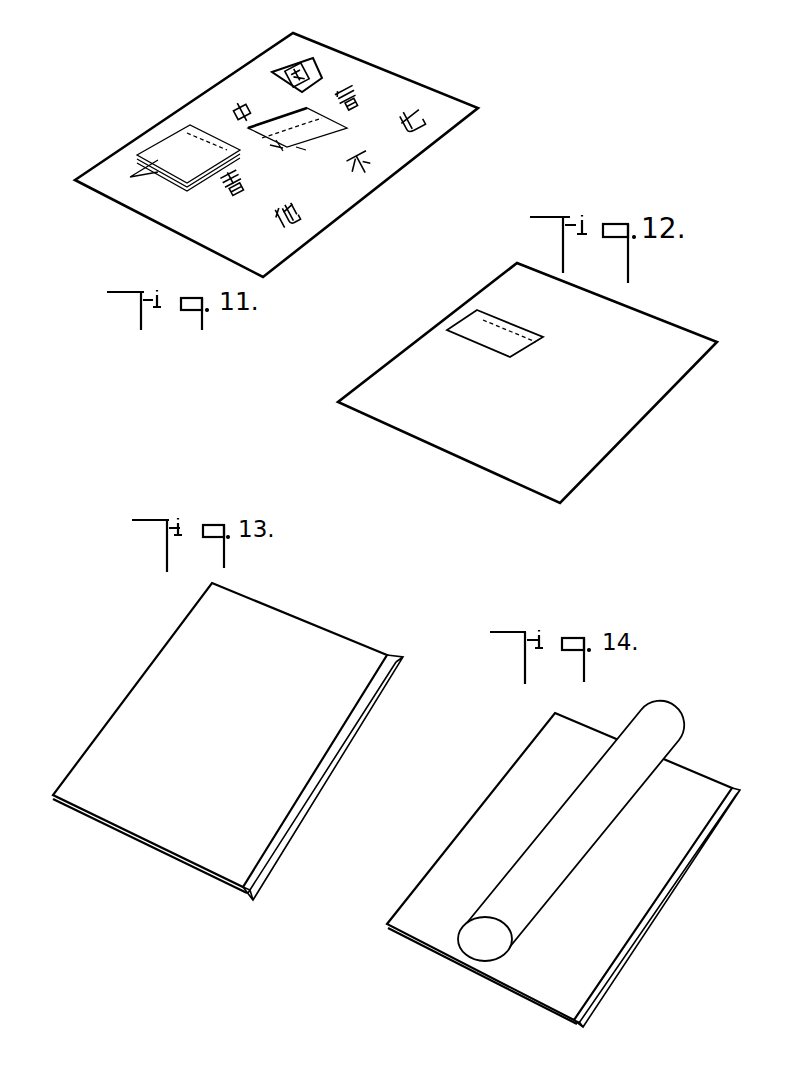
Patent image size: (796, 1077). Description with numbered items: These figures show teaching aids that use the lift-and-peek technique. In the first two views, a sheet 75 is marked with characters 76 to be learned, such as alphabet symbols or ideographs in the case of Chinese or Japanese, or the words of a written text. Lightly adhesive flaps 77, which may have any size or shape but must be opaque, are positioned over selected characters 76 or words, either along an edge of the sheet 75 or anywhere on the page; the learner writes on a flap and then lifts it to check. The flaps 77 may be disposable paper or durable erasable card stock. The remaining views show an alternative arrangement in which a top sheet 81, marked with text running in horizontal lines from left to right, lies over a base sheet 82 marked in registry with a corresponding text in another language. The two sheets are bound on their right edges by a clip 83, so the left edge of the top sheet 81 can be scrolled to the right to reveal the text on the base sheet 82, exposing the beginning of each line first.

In FIG. 11, the sheet 75 is at (283, 47).
In FIG. 12, the sheet 75 is at (630, 313).
In FIG. 11, the characters 76 is at (357, 87).
In FIG. 11, the flaps 77 is at (140, 170).
In FIG. 12, the flaps 77 is at (452, 330).
In FIG. 13, the top sheet 81 is at (243, 607).
In FIG. 14, the top sheet 81 is at (651, 713).
In FIG. 14, the base sheet 82 is at (544, 730).
In FIG. 13, the clip 83 is at (298, 826).
In FIG. 14, the clip 83 is at (650, 921).